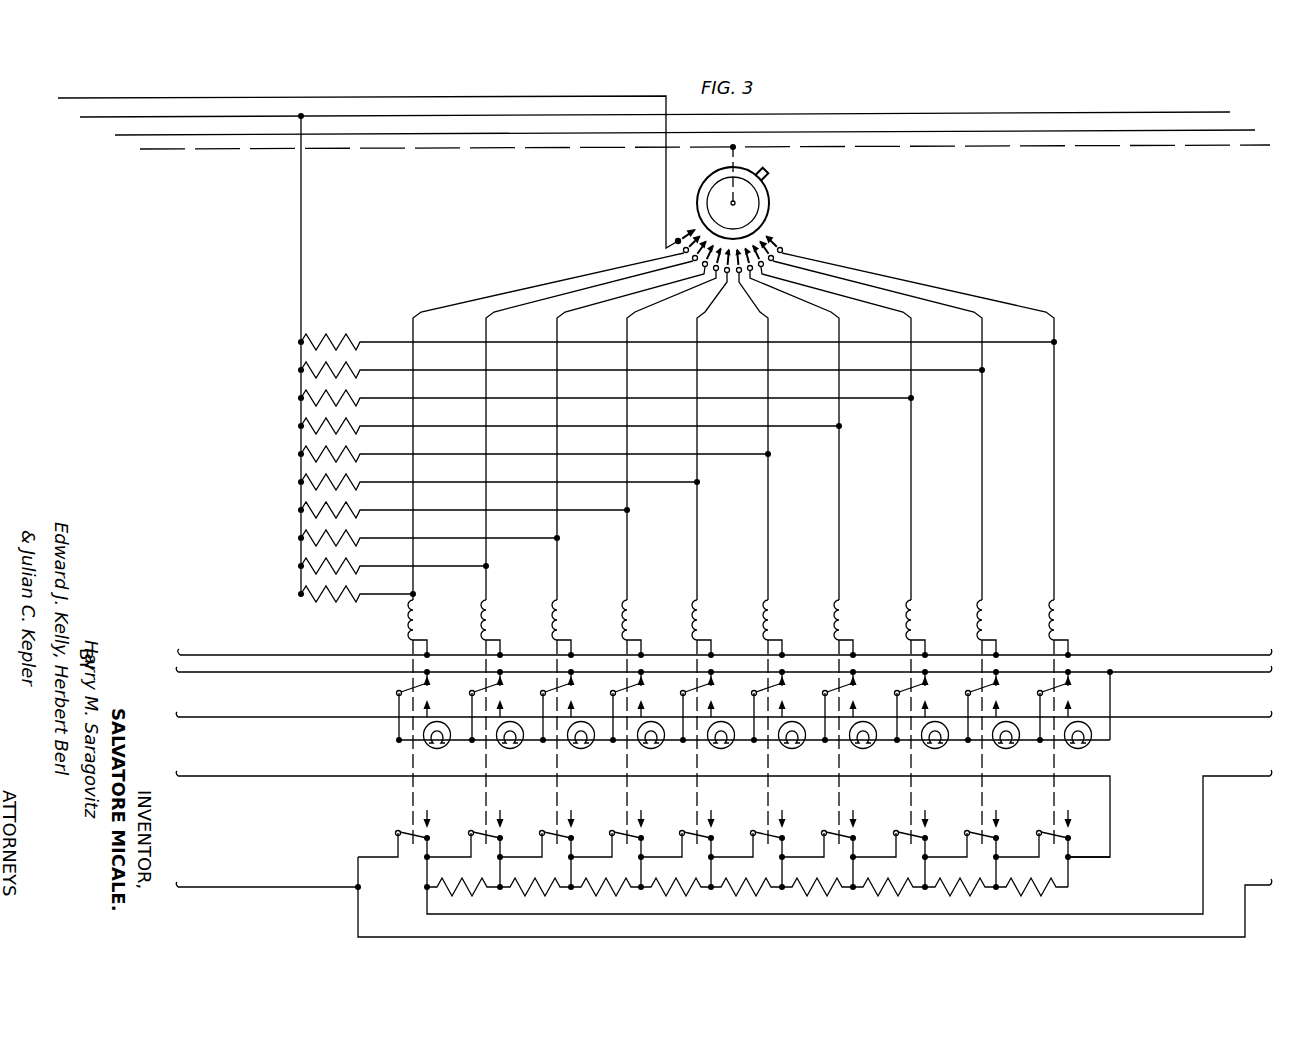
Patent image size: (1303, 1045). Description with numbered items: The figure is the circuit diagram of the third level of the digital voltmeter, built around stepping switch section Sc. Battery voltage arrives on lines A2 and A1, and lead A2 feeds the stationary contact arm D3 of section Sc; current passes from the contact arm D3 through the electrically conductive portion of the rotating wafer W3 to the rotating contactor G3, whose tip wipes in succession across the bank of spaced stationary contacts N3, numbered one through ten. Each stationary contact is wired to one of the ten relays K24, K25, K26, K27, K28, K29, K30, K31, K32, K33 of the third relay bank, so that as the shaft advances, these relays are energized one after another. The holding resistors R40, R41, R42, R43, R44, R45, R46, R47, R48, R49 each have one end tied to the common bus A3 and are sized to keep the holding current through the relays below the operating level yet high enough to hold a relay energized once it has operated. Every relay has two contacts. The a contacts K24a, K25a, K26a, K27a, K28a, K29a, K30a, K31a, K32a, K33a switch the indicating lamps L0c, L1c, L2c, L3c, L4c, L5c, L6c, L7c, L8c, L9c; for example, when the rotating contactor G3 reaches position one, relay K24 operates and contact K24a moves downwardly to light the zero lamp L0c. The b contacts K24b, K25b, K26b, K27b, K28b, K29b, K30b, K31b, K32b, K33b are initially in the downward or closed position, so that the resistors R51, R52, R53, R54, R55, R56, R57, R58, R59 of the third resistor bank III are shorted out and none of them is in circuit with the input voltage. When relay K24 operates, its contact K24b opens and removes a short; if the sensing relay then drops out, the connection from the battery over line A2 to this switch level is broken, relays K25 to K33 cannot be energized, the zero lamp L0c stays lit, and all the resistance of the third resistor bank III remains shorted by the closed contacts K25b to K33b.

The lead A1 is at (115, 135).
The line A2 is at (58, 98).
The common bus A3 is at (80, 117).
The rotating contactor G3 is at (706, 178).
The stationary contact arm D3 is at (704, 222).
The rotating wafer W3 is at (767, 176).
The stepping switch section Sc is at (772, 205).
The stationary contacts N3 is at (788, 240).
The resistor R40 is at (348, 337).
The resistor R41 is at (348, 365).
The resistor R42 is at (348, 393).
The resistor R43 is at (348, 421).
The resistor R44 is at (348, 449).
The resistor R45 is at (348, 477).
The resistor R46 is at (348, 505).
The resistor R47 is at (348, 533).
The resistor R48 is at (348, 561).
The resistor R49 is at (348, 589).
The relay K24 is at (417, 618).
The relay K25 is at (490, 618).
The relay K26 is at (561, 618).
The relay K27 is at (631, 618).
The relay K28 is at (701, 618).
The relay K29 is at (772, 618).
The relay K30 is at (843, 618).
The relay K31 is at (915, 618).
The relay K32 is at (986, 618).
The relay K33 is at (1058, 618).
The relay contact K24a is at (398, 692).
The relay contact K25a is at (472, 706).
The relay contact K26a is at (543, 706).
The relay contact K27a is at (613, 706).
The relay contact K28a is at (683, 706).
The relay contact K29a is at (754, 706).
The relay contact K30a is at (825, 706).
The relay contact K31a is at (897, 706).
The relay contact K32a is at (968, 706).
The relay contact K33a is at (1040, 706).
The relay contact K24b is at (407, 828).
The relay contact K25b is at (480, 828).
The relay contact K26b is at (551, 828).
The relay contact K27b is at (621, 828).
The relay contact K28b is at (691, 828).
The relay contact K29b is at (762, 828).
The relay contact K30b is at (833, 828).
The relay contact K31b is at (905, 828).
The relay contact K32b is at (976, 828).
The relay contact K33b is at (1048, 828).
The lamp L0c is at (426, 748).
The lamp L1c is at (499, 748).
The lamp L2c is at (570, 748).
The lamp L3c is at (640, 748).
The lamp L4c is at (710, 748).
The lamp L5c is at (781, 748).
The lamp L6c is at (852, 748).
The lamp L7c is at (924, 748).
The lamp L8c is at (995, 748).
The lamp L9c is at (1067, 748).
The resistor R51 is at (481, 893).
The resistor R52 is at (554, 893).
The resistor R53 is at (625, 893).
The resistor R54 is at (695, 893).
The resistor R55 is at (765, 893).
The resistor R56 is at (836, 893).
The resistor R57 is at (907, 893).
The resistor R58 is at (979, 893).
The resistor R59 is at (1050, 893).
The third resistor bank III is at (1084, 879).